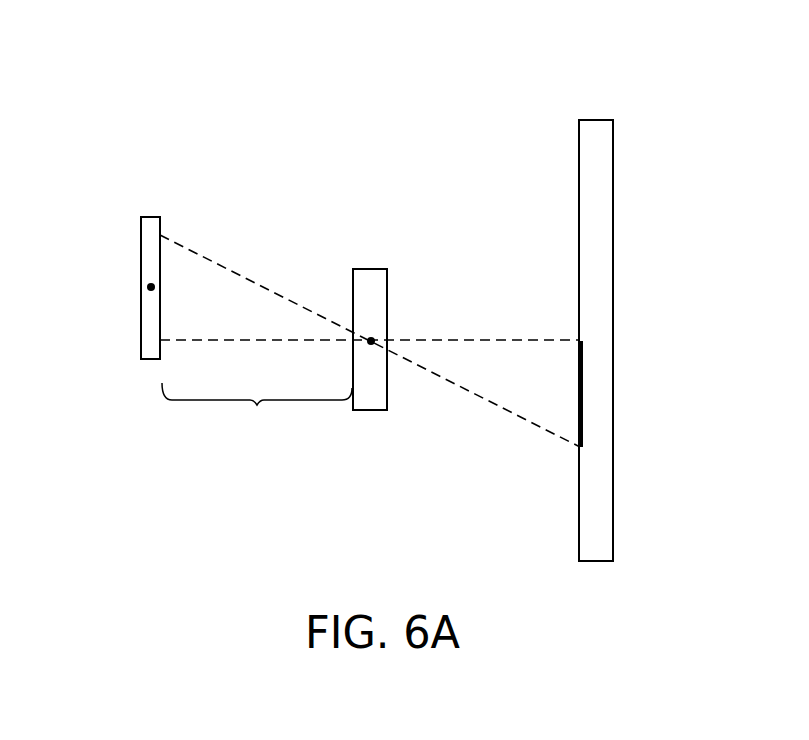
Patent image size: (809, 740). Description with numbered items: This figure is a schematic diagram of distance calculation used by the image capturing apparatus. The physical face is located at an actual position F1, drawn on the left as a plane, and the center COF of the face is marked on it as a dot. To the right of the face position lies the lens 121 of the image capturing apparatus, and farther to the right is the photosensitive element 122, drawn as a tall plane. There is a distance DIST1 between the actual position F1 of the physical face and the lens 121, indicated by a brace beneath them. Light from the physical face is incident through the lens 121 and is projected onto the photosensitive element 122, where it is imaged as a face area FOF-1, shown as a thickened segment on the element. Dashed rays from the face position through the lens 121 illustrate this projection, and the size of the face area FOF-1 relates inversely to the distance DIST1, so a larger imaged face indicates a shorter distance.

The actual position of the physical face F1 is at (152, 217).
The center of the face area COF is at (150, 287).
The lens 121 is at (370, 269).
The photosensitive element 122 is at (599, 120).
The face area FOF-1 is at (582, 400).
The distance DIST1 is at (257, 411).